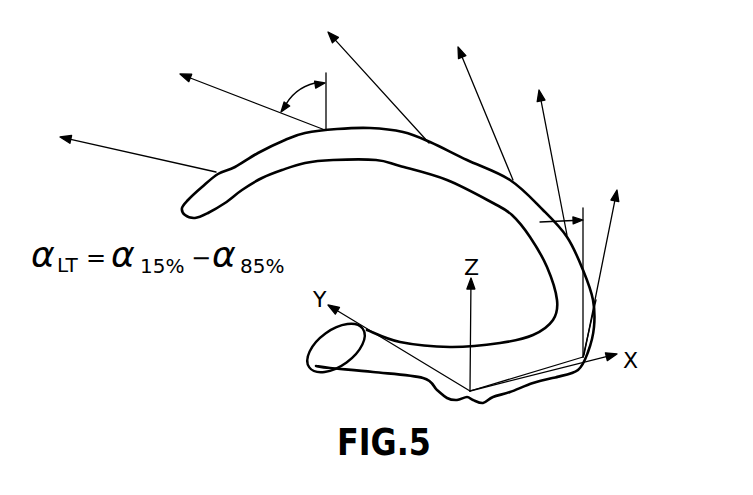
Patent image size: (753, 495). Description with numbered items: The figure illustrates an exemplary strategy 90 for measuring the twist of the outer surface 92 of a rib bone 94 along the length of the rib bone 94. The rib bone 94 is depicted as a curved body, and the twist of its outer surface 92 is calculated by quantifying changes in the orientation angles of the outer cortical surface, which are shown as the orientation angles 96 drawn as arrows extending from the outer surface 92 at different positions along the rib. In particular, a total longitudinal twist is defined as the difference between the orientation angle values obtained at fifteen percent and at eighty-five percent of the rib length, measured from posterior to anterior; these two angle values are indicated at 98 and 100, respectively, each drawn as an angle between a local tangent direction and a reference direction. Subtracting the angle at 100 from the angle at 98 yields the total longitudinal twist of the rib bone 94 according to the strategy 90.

The exemplary strategy 90 is at (131, 82).
The outer surface 92 is at (548, 358).
The rib bone 94 is at (524, 406).
The orientation angles 96 is at (474, 80).
The orientation angle at 15% of rib length 98 is at (620, 223).
The orientation angle at 85% of rib length 100 is at (300, 87).